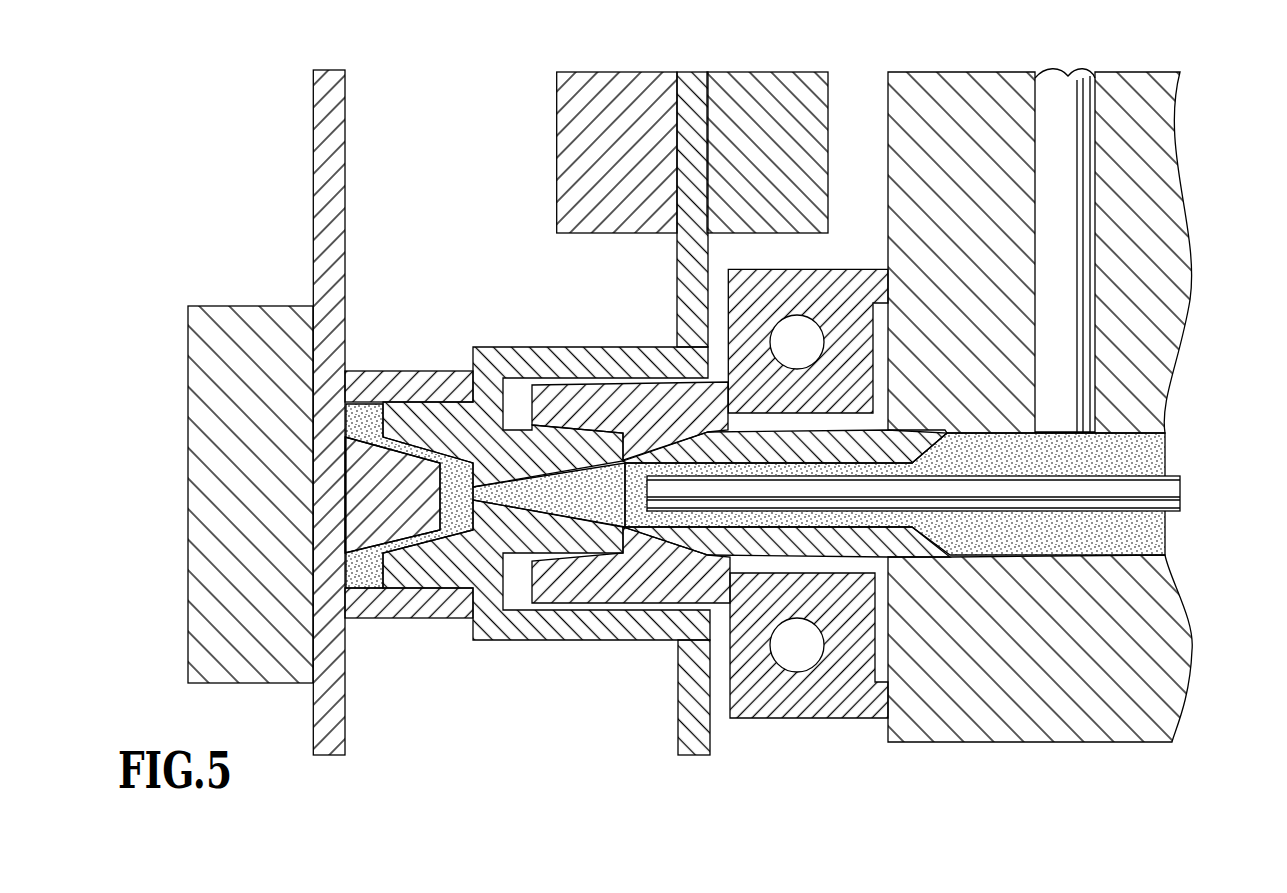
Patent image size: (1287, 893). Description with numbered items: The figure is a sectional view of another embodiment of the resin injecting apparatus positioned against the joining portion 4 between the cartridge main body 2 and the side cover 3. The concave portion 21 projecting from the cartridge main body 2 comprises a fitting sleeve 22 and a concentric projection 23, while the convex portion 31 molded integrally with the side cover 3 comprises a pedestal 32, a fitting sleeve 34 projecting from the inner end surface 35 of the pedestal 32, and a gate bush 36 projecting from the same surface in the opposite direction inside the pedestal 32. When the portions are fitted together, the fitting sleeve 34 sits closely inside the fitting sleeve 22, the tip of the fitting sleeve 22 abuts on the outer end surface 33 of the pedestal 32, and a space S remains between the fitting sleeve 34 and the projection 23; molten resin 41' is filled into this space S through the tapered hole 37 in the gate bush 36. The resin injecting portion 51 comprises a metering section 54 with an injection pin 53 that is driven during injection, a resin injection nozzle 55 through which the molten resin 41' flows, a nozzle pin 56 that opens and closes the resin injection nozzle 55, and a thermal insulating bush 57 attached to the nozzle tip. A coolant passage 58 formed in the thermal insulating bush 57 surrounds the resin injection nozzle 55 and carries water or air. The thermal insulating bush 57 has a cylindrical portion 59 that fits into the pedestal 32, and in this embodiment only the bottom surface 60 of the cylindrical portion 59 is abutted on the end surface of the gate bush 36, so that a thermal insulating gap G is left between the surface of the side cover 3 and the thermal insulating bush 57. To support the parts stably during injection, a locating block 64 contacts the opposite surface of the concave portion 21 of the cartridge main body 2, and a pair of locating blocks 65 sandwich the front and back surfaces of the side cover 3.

The cartridge main body 2 is at (335, 147).
The side cover 3 is at (690, 740).
The joining portion 4 is at (462, 224).
The concave portion 21 is at (390, 690).
The fitting sleeve 22 is at (400, 386).
The projection 23 is at (437, 545).
The convex portion 31 is at (557, 690).
The pedestal 32 is at (598, 624).
The outer end surface 33 is at (468, 384).
The fitting sleeve 34 is at (412, 560).
The inner end surface 35 is at (508, 562).
The gate bush 36 is at (617, 443).
The tapered hole 37 is at (585, 470).
The molten resin 41' is at (754, 452).
The resin injecting portion 51 is at (1007, 68).
The injection pin 53 is at (1075, 160).
The metering section 54 is at (1107, 298).
The resin injection nozzle 55 is at (820, 547).
The nozzle pin 56 is at (1135, 478).
The thermal insulating bush 57 is at (862, 276).
The coolant passage 58 is at (800, 334).
The cylindrical portion 59 is at (562, 400).
The bottom surface 60 is at (618, 545).
The locating block 64 is at (248, 322).
The locating blocks 65 is at (620, 92).
The space S is at (360, 569).
The thermal insulating gap G is at (728, 677).